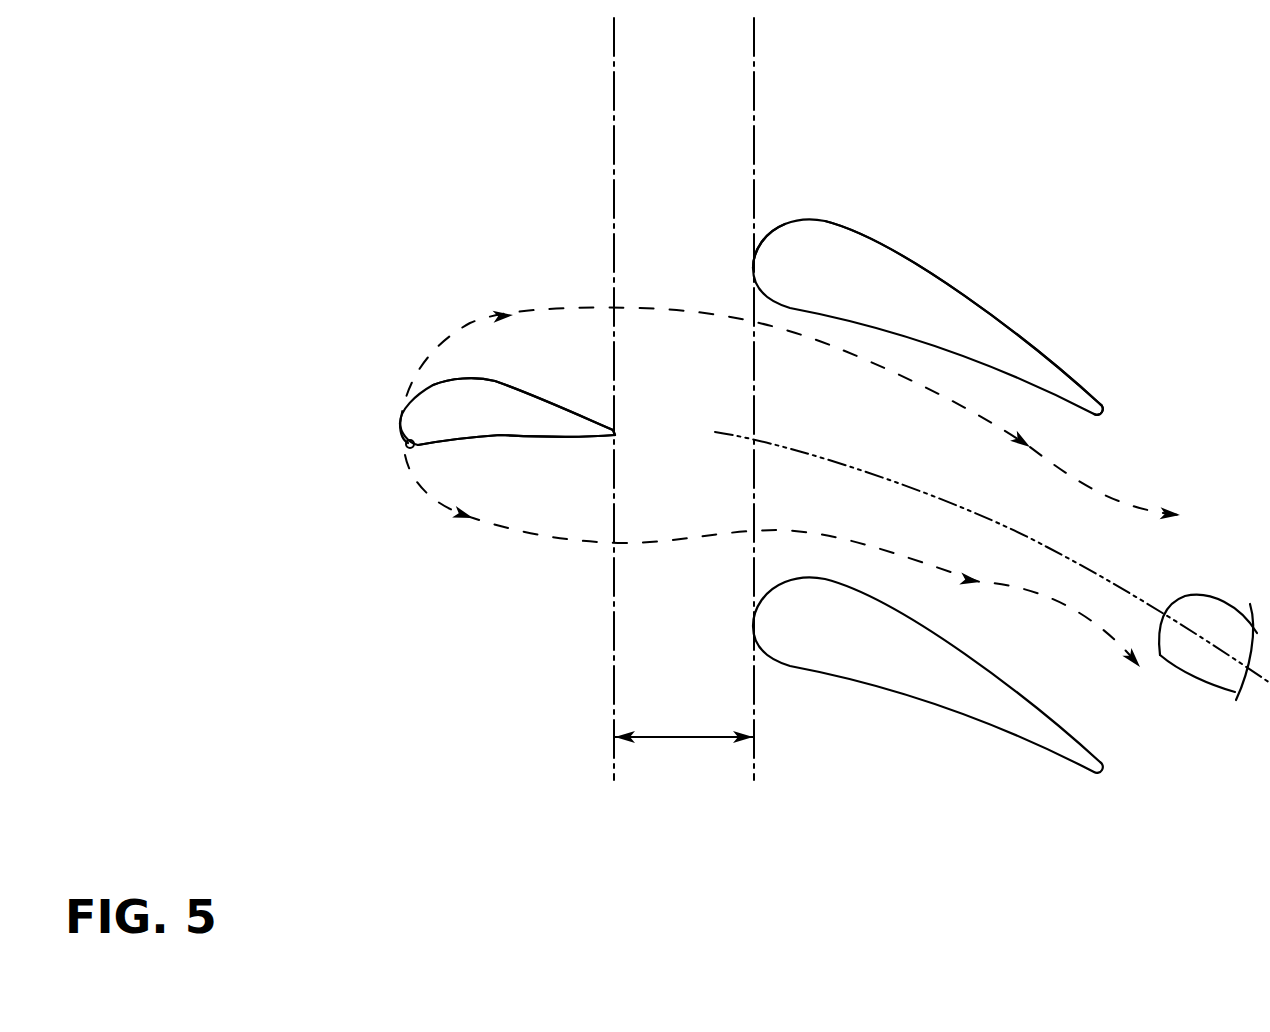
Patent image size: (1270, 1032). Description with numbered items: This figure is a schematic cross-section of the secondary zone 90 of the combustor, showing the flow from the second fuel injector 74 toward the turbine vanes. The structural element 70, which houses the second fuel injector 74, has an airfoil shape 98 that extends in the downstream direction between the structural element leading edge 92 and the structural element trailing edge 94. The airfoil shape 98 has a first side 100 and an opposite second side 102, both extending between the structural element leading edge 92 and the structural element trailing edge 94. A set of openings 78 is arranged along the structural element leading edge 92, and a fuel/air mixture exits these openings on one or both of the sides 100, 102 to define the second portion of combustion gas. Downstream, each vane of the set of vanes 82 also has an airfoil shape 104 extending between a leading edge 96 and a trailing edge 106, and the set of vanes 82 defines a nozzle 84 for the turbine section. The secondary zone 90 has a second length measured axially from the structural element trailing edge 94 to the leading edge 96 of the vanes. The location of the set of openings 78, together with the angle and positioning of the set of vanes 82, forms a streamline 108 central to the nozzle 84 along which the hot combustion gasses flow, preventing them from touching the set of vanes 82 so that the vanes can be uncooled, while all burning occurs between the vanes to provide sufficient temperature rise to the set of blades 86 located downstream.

The structural element 70 is at (461, 391).
The second fuel injector 74 is at (461, 391).
The set of openings 78 is at (414, 448).
The set of vanes 82 is at (928, 496).
The nozzle 84 is at (779, 488).
The set of blades 86 is at (1208, 647).
The secondary zone 90 is at (645, 250).
The structural element leading edge 92 is at (406, 447).
The structural element trailing edge 94 is at (616, 435).
The leading edge 96 is at (752, 266).
The airfoil shape 98 is at (360, 362).
The first side 100 is at (500, 380).
The second side 102 is at (495, 437).
The airfoil shape 104 is at (940, 268).
The trailing edge 106 is at (1103, 409).
The streamline 108 is at (1064, 553).